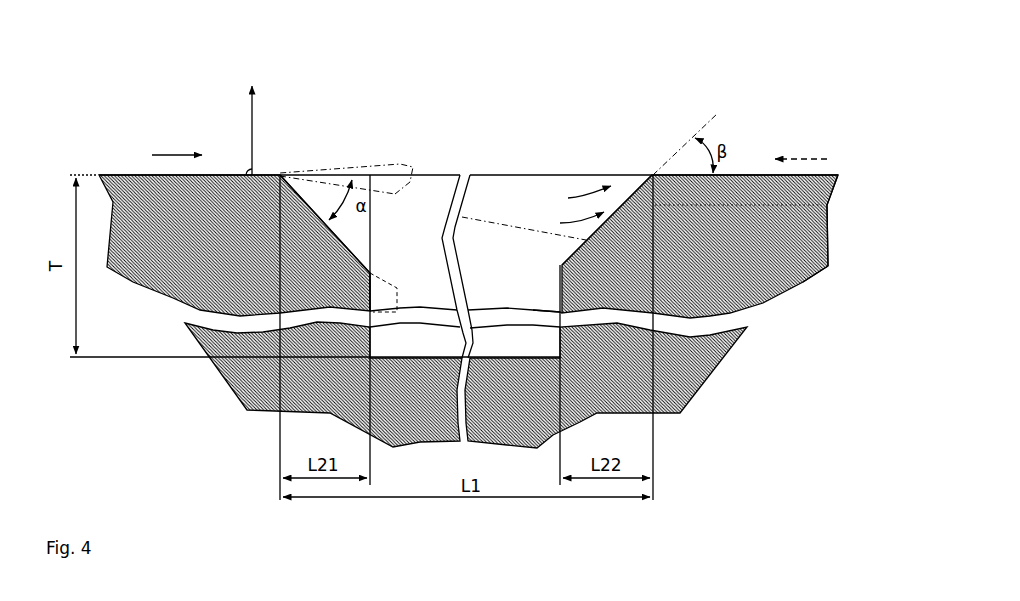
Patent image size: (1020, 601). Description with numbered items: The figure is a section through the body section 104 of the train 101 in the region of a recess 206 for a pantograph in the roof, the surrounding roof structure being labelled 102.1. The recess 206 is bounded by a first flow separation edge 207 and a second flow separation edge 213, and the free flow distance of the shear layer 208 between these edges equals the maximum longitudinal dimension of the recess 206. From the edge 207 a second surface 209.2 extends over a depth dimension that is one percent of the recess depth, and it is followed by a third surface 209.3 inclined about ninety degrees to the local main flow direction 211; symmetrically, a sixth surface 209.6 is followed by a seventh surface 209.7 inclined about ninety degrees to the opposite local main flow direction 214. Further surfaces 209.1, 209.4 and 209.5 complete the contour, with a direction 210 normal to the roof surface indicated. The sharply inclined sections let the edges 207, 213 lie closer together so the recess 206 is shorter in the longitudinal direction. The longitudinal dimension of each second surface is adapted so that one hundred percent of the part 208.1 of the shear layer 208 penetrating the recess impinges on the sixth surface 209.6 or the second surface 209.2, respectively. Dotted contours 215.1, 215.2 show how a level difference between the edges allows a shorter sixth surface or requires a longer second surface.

The train 101 is at (816, 44).
The top surface of upper tool 102.1 is at (742, 173).
The body section 104 is at (505, 449).
The recess 206 is at (438, 306).
The flow separation edge 207 is at (280, 176).
The shear layer 208 is at (323, 171).
The upper tool portion 208.1 is at (587, 229).
The top surface of upper tool 209.1 is at (137, 172).
The second surface 209.2 is at (301, 194).
The third surface 209.3 is at (374, 276).
The channel 209.4 is at (403, 351).
The surface of upper tool 209.5 is at (687, 173).
The sixth surface 209.6 is at (632, 194).
The seventh surface 209.7 is at (555, 306).
The normal direction 210 is at (248, 122).
The local main flow direction 211 is at (175, 149).
The flow separation edge 213 is at (653, 173).
The local main flow direction 214 is at (805, 158).
The dotted contour 215.1 is at (779, 209).
The dotted contour 215.2 is at (396, 299).